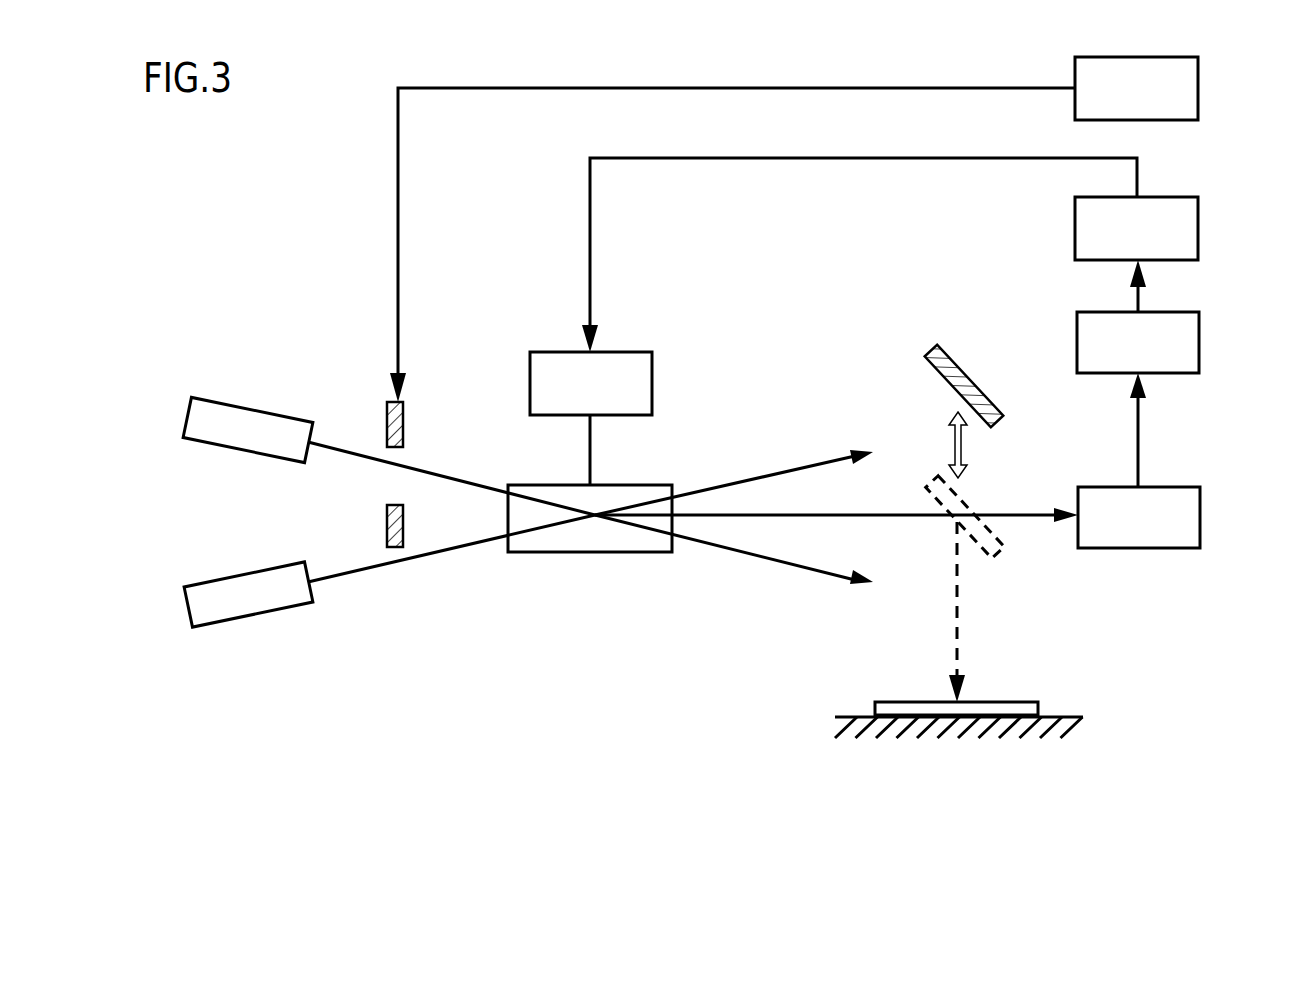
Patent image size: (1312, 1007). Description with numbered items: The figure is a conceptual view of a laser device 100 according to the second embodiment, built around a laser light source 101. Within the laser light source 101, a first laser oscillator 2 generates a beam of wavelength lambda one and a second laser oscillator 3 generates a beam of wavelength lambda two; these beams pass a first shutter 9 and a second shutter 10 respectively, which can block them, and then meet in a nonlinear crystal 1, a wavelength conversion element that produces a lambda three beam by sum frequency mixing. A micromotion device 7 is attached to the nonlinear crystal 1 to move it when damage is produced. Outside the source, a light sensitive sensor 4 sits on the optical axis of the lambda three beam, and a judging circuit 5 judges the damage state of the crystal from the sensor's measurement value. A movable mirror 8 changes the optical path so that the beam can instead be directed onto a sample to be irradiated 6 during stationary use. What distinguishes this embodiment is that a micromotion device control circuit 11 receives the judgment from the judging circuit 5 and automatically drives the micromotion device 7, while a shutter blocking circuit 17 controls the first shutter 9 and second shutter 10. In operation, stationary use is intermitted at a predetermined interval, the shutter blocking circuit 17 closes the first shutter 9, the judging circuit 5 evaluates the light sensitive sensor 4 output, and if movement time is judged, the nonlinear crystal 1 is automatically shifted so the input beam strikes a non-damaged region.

The nonlinear crystal 1 is at (640, 493).
The first laser oscillator 2 is at (255, 407).
The second laser oscillator 3 is at (262, 570).
The light sensitive sensor 4 is at (1200, 482).
The judging circuit 5 is at (1076, 342).
The sample to be irradiated 6 is at (1020, 702).
The micromotion device 7 is at (652, 356).
The movable mirror 8 is at (962, 372).
The first shutter 9 is at (403, 413).
The second shutter 10 is at (388, 513).
The micromotion device control circuit 11 is at (1076, 225).
The shutter blocking circuit 17 is at (1199, 72).
The laser device 100 is at (753, 780).
The laser light source 101 is at (708, 702).